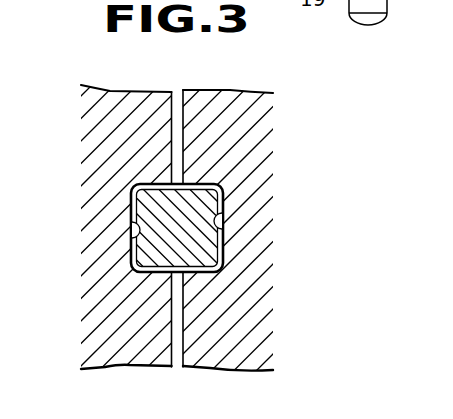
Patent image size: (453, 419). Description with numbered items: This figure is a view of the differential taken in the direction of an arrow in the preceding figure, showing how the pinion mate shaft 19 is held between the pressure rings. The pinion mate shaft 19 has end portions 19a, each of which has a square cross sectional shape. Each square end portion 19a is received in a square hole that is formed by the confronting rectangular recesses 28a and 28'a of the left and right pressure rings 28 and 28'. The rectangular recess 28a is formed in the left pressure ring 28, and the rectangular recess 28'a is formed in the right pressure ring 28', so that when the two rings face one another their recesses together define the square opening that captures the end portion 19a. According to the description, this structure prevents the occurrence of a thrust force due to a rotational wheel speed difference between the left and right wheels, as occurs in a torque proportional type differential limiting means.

The left pressure ring 28 is at (102, 227).
The right pressure ring 28' is at (264, 230).
The rectangular recess 28a is at (136, 237).
The rectangular recess 28'a is at (287, 211).
The pinion mate shaft 19 is at (185, 241).
The end portion 19a is at (202, 250).